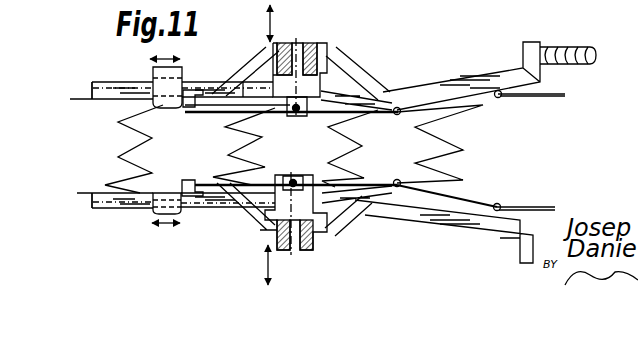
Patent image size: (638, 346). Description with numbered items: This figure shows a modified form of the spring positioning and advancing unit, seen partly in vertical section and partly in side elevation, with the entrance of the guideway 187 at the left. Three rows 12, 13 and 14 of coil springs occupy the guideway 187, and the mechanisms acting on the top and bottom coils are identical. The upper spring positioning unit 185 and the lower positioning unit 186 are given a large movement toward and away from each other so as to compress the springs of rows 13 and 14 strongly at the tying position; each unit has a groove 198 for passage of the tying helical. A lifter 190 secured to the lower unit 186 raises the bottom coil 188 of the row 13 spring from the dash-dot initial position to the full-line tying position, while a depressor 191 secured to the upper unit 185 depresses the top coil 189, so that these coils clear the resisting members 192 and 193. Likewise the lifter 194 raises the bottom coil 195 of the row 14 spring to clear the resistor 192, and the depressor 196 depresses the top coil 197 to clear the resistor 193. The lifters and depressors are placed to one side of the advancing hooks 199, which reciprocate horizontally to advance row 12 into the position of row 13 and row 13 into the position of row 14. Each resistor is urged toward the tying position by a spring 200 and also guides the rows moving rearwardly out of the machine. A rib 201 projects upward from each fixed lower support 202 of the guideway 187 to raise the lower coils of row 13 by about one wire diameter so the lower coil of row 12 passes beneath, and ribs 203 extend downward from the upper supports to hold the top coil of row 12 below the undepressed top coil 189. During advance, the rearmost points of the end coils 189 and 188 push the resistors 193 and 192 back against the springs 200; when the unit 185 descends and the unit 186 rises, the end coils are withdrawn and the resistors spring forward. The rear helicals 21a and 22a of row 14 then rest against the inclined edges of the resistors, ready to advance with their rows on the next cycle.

The row of springs 12 is at (140, 150).
The row of springs 13 is at (228, 153).
The row of springs 14 is at (353, 137).
The rear helical 21a is at (440, 144).
The rear helical 22a is at (401, 182).
The spring positioning unit 185 is at (328, 71).
The positioning unit 186 is at (336, 219).
The guideway 187 is at (108, 150).
The bottom coil 188 is at (202, 180).
The top coil 189 is at (212, 118).
The lifter 190 is at (258, 214).
The depressor 191 is at (259, 62).
The resisting member 192 is at (470, 232).
The resisting member 193 is at (470, 62).
The lifter 194 is at (339, 206).
The bottom coil 195 is at (380, 182).
The depressor 196 is at (356, 84).
The top coil 197 is at (320, 112).
The groove 198 is at (295, 173).
The advancing hook 199 is at (181, 70).
The spring 200 is at (559, 47).
The rib 201 is at (201, 196).
The fixed lower support 202 is at (95, 208).
The rib 203 is at (108, 96).